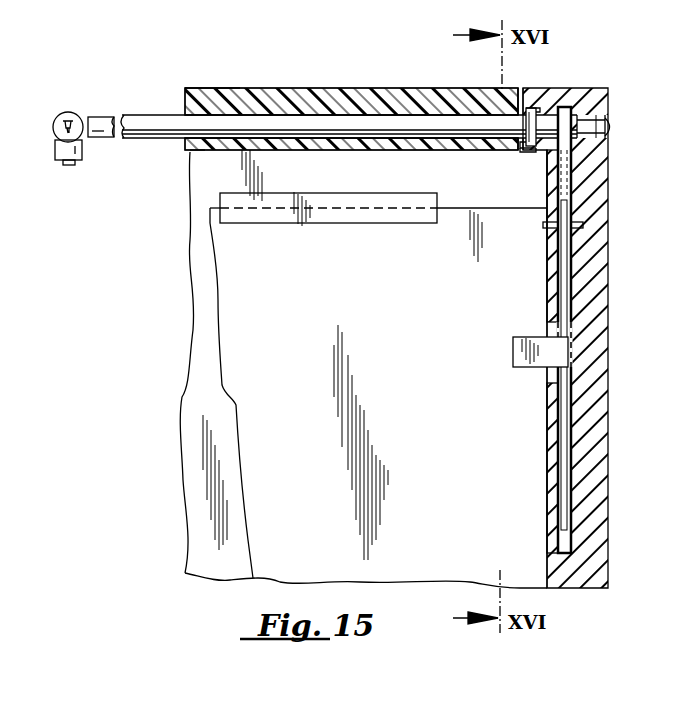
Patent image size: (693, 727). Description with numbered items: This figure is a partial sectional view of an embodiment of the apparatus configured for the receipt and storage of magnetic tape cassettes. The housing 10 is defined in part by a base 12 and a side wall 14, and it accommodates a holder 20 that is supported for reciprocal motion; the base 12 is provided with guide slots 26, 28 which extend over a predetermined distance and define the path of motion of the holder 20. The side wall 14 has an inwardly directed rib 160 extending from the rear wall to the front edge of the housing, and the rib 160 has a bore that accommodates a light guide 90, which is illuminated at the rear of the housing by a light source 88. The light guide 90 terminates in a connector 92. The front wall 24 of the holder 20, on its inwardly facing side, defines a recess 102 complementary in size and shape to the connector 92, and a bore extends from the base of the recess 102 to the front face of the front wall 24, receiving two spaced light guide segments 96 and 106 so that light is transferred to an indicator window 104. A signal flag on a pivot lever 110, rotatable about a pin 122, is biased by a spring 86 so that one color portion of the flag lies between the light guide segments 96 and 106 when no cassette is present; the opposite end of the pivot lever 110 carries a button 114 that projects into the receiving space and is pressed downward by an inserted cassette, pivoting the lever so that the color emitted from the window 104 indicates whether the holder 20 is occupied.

The housing 10 is at (227, 82).
The base 12 is at (190, 402).
The side wall 14 is at (265, 107).
The holder 20 is at (591, 338).
The front wall 24 is at (597, 410).
The guide slots 26 is at (323, 238).
The light conductor 28 is at (350, 210).
The spring 86 is at (556, 408).
The light source 88 is at (72, 112).
The light guide 90 is at (150, 118).
The connector 92 is at (529, 105).
The light guide segment 96 is at (547, 117).
The recess 102 is at (529, 152).
The indicator window 104 is at (610, 121).
The light guide segment 106 is at (600, 129).
The pivot lever 110 is at (563, 202).
The button 114 is at (522, 348).
The pin 122 is at (543, 223).
The rib 160 is at (200, 147).